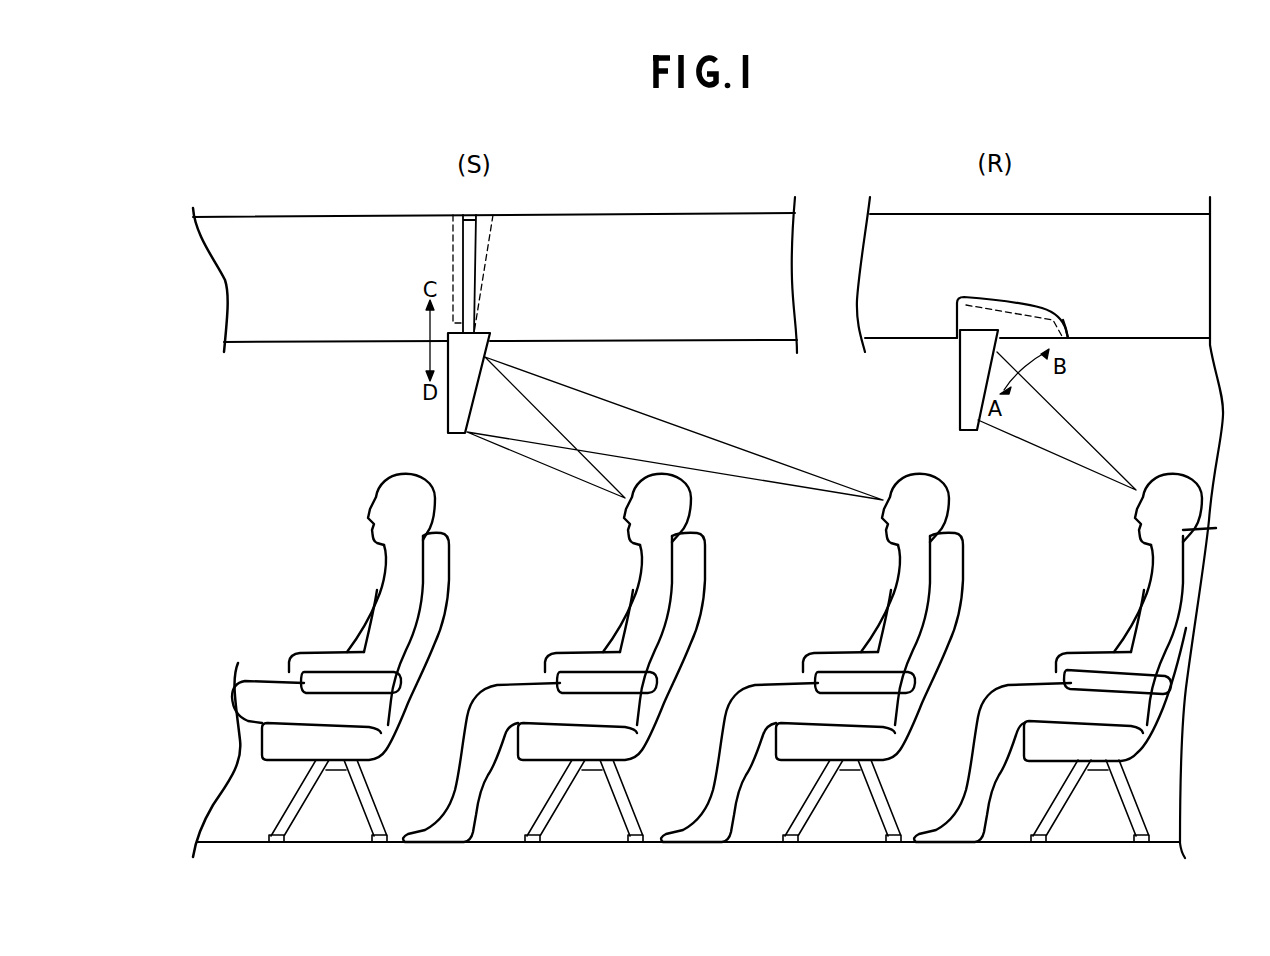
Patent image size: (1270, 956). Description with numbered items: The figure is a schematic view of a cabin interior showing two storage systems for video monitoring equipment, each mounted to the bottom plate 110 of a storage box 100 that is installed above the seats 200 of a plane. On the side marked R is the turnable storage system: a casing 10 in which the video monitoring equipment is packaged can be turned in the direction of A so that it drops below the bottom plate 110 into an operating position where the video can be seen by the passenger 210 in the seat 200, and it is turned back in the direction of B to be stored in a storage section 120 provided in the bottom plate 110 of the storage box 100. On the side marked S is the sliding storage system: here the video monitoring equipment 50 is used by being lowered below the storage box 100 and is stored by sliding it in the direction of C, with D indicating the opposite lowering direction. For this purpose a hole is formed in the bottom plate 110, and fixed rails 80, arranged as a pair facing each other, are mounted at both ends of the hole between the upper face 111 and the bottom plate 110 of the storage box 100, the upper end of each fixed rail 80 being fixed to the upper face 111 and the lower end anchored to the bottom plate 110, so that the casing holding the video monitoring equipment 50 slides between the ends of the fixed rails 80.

The casing 10 is at (963, 298).
The video monitoring equipment 50 is at (480, 240).
The fixed rail 80 is at (466, 240).
The storage box 100 is at (1068, 222).
The bottom plate 110 is at (1140, 340).
The upper face 111 is at (590, 222).
The storage section 120 is at (1063, 332).
The seat 200 is at (442, 577).
The passenger 210 is at (632, 580).